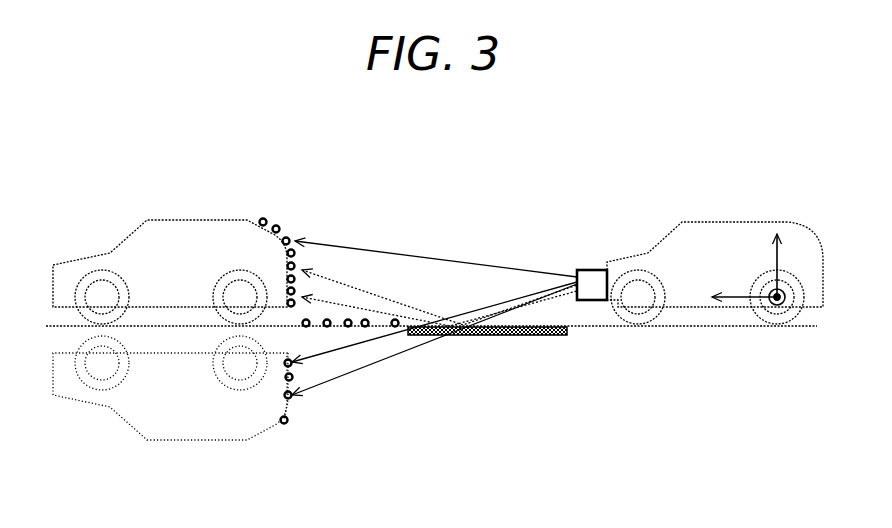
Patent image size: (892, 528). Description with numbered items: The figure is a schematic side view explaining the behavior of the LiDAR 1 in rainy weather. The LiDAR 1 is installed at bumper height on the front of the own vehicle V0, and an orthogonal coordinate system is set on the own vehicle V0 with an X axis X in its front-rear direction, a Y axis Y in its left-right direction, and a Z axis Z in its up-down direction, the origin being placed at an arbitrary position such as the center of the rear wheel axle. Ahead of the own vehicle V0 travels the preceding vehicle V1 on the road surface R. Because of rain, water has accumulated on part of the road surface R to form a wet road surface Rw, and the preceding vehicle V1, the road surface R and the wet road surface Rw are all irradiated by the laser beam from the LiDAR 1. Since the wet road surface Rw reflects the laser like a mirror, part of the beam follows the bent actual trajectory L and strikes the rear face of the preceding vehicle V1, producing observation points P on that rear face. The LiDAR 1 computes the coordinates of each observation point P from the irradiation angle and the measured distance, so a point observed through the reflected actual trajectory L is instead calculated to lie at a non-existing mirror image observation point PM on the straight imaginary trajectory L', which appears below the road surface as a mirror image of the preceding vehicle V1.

The LiDAR 1 is at (583, 270).
The own vehicle V0 is at (698, 221).
The preceding vehicle V1 is at (150, 220).
The observation point P is at (279, 231).
The mirror image observation point PM is at (294, 398).
The actual trajectory L is at (436, 283).
The imaginary trajectory L' is at (434, 339).
The wet road surface Rw is at (502, 337).
The road surface R is at (683, 328).
The X axis X is at (733, 298).
The Y axis Y is at (775, 324).
The Z axis Z is at (775, 250).